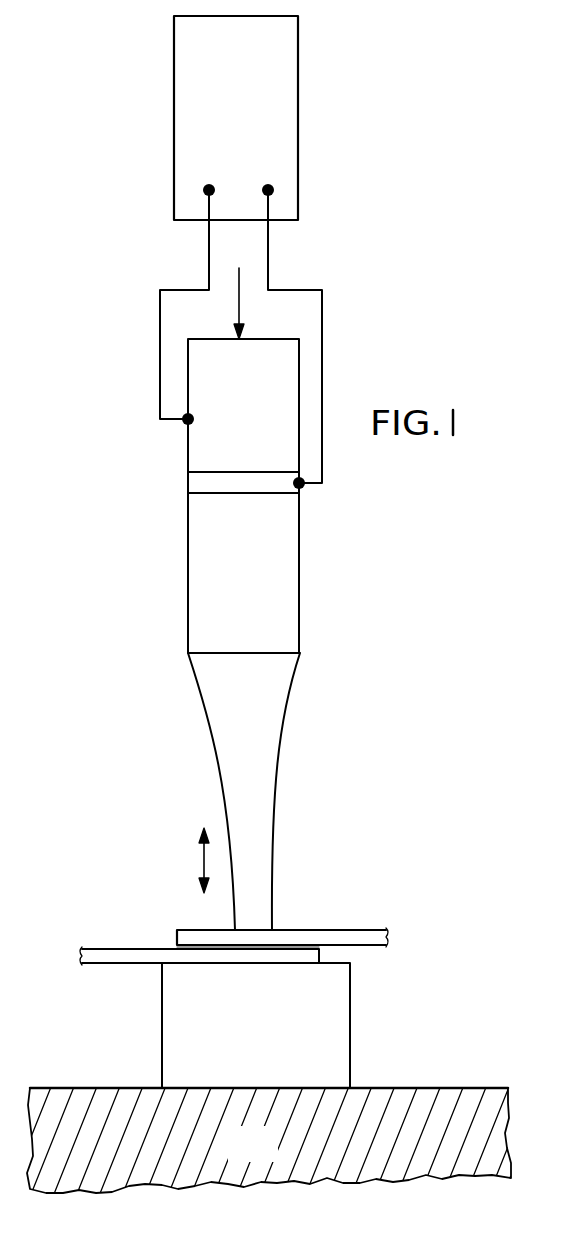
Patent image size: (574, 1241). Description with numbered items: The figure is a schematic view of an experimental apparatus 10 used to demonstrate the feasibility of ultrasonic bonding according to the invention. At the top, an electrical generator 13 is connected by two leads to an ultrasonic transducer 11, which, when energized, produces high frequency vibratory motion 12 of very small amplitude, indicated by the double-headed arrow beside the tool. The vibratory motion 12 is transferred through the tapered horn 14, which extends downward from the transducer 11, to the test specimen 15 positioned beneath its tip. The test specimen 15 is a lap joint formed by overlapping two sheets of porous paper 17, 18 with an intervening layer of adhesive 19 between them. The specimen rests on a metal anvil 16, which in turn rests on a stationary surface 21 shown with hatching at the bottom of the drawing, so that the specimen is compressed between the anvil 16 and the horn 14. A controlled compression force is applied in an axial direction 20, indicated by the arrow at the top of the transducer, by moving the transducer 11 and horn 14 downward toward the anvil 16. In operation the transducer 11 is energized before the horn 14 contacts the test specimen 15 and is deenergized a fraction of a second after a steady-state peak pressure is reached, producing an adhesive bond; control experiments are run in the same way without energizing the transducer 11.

The experimental apparatus 10 is at (275, 634).
The ultrasonic transducer 11 is at (190, 482).
The vibratory motion 12 is at (201, 862).
The electrical generator 13 is at (247, 119).
The horn 14 is at (256, 697).
The test specimen 15 is at (241, 921).
The anvil 16 is at (264, 1037).
The porous paper 17 is at (350, 930).
The porous paper 18 is at (136, 962).
The layer of adhesive 19 is at (319, 947).
The axial direction 20 is at (244, 313).
The stationary surface 21 is at (266, 1156).